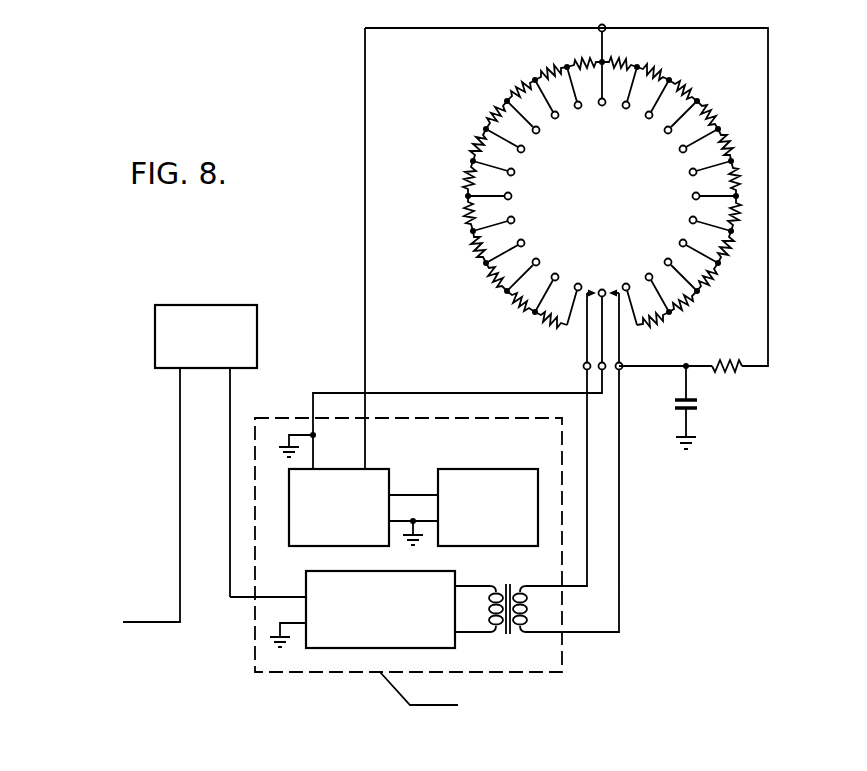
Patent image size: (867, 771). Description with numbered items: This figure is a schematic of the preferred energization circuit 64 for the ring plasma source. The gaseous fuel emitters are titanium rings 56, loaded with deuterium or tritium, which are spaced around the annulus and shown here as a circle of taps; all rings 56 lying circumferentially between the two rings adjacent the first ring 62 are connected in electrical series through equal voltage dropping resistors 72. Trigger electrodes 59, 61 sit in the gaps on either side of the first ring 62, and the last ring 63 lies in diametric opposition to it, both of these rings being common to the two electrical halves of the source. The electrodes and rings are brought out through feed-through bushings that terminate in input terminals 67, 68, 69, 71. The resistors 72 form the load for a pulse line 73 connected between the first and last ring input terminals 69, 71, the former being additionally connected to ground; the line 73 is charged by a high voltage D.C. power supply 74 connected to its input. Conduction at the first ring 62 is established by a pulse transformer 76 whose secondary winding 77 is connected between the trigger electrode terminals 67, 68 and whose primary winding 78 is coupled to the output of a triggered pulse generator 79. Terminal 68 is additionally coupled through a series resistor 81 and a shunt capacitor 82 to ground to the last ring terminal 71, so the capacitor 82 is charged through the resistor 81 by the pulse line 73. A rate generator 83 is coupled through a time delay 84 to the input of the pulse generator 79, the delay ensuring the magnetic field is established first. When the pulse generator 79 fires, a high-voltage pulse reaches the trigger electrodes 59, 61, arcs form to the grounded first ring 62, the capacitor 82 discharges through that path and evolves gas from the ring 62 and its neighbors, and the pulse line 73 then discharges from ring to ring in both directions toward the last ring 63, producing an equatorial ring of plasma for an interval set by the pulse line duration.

The titanium rings 56 is at (512, 195).
The trigger electrode 59 is at (590, 286).
The trigger electrode 61 is at (616, 288).
The first ring 62 is at (602, 289).
The last ring 63 is at (603, 107).
The energization circuit 64 is at (292, 672).
The trigger electrode terminal 67 is at (583, 367).
The trigger electrode terminal 68 is at (622, 370).
The first ring input terminal 69 is at (606, 364).
The last ring input terminal 71 is at (605, 25).
The voltage dropping resistors 72 is at (688, 86).
The pulse line 73 is at (380, 468).
The D.C. power supply 74 is at (489, 468).
The pulse transformer 76 is at (510, 638).
The secondary winding 77 is at (528, 616).
The primary winding 78 is at (491, 597).
The triggered pulse generator 79 is at (306, 574).
The series resistor 81 is at (724, 364).
The shunt capacitor 82 is at (701, 407).
The rate generator 83 is at (92, 623).
The time delay 84 is at (155, 343).